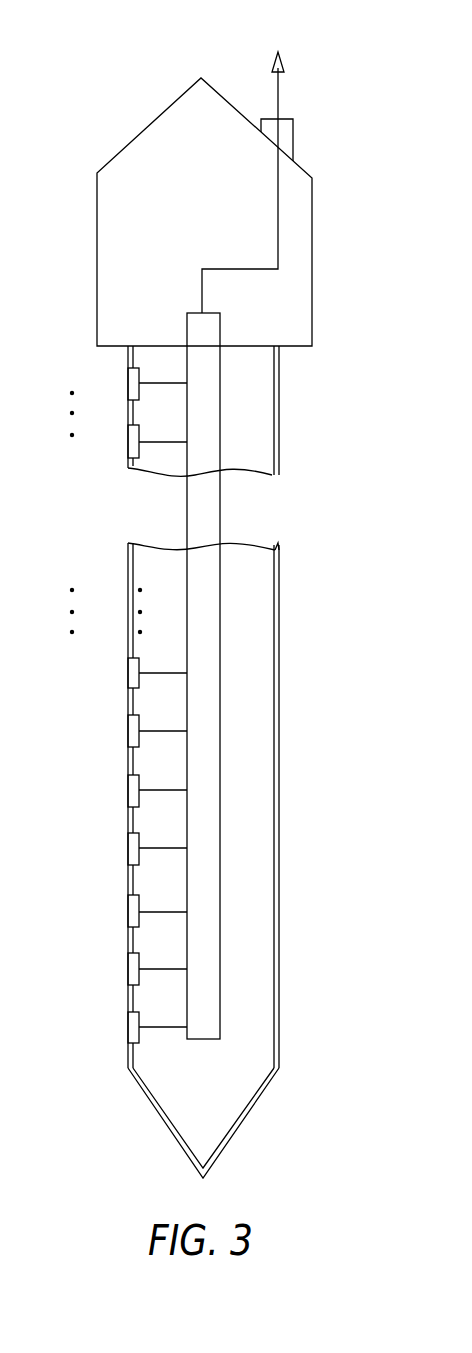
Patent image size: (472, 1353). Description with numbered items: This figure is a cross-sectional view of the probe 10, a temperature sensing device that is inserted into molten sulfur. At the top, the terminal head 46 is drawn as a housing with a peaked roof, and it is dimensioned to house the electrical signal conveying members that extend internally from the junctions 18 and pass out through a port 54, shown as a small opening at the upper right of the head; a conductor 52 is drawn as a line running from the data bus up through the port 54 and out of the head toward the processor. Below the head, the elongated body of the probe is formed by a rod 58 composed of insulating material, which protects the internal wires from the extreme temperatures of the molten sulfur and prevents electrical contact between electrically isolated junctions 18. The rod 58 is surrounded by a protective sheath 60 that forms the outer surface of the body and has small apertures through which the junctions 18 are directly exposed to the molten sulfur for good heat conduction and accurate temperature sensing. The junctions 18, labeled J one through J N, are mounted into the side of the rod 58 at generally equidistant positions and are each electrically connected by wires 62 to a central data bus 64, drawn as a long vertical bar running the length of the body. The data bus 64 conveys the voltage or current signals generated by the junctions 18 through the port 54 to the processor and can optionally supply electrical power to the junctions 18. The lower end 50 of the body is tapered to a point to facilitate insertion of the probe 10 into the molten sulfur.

The probe 10 is at (120, 72).
The terminal head 46 is at (108, 207).
The port 54 is at (295, 137).
The cable 52 is at (280, 242).
The data bus 64 is at (210, 760).
The protective sheath 60 is at (282, 552).
The rod 58 is at (247, 667).
The lower end 50 is at (252, 1112).
The junctions 18 is at (135, 685).
The wires 62 is at (162, 849).